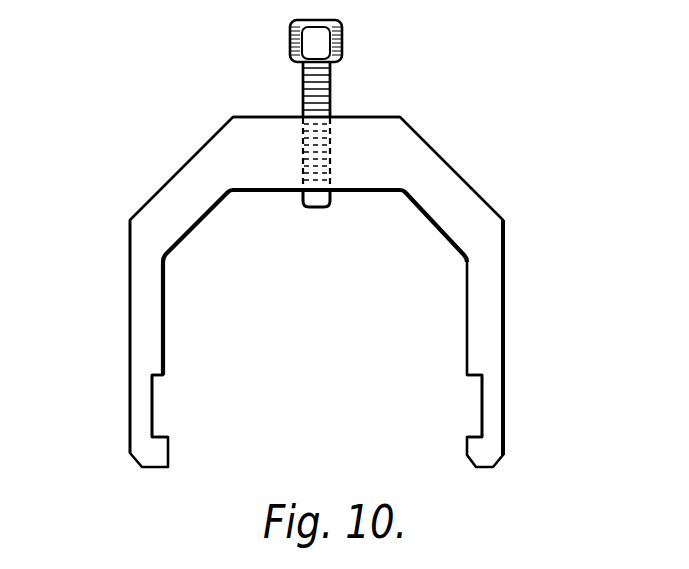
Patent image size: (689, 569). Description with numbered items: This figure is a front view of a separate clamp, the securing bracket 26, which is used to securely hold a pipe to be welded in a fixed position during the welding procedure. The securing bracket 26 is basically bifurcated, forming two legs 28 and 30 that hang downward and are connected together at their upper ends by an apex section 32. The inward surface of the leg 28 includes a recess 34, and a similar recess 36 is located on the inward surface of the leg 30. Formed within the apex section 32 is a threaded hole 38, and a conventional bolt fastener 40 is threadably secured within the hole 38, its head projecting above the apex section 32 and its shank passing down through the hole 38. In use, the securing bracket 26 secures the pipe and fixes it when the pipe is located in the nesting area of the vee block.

The securing bracket 26 is at (178, 159).
The leg 28 is at (141, 358).
The leg 30 is at (493, 339).
The apex section 32 is at (393, 127).
The recess 34 is at (153, 401).
The recess 36 is at (482, 405).
The threaded hole 38 is at (330, 111).
The bolt fastener 40 is at (304, 90).